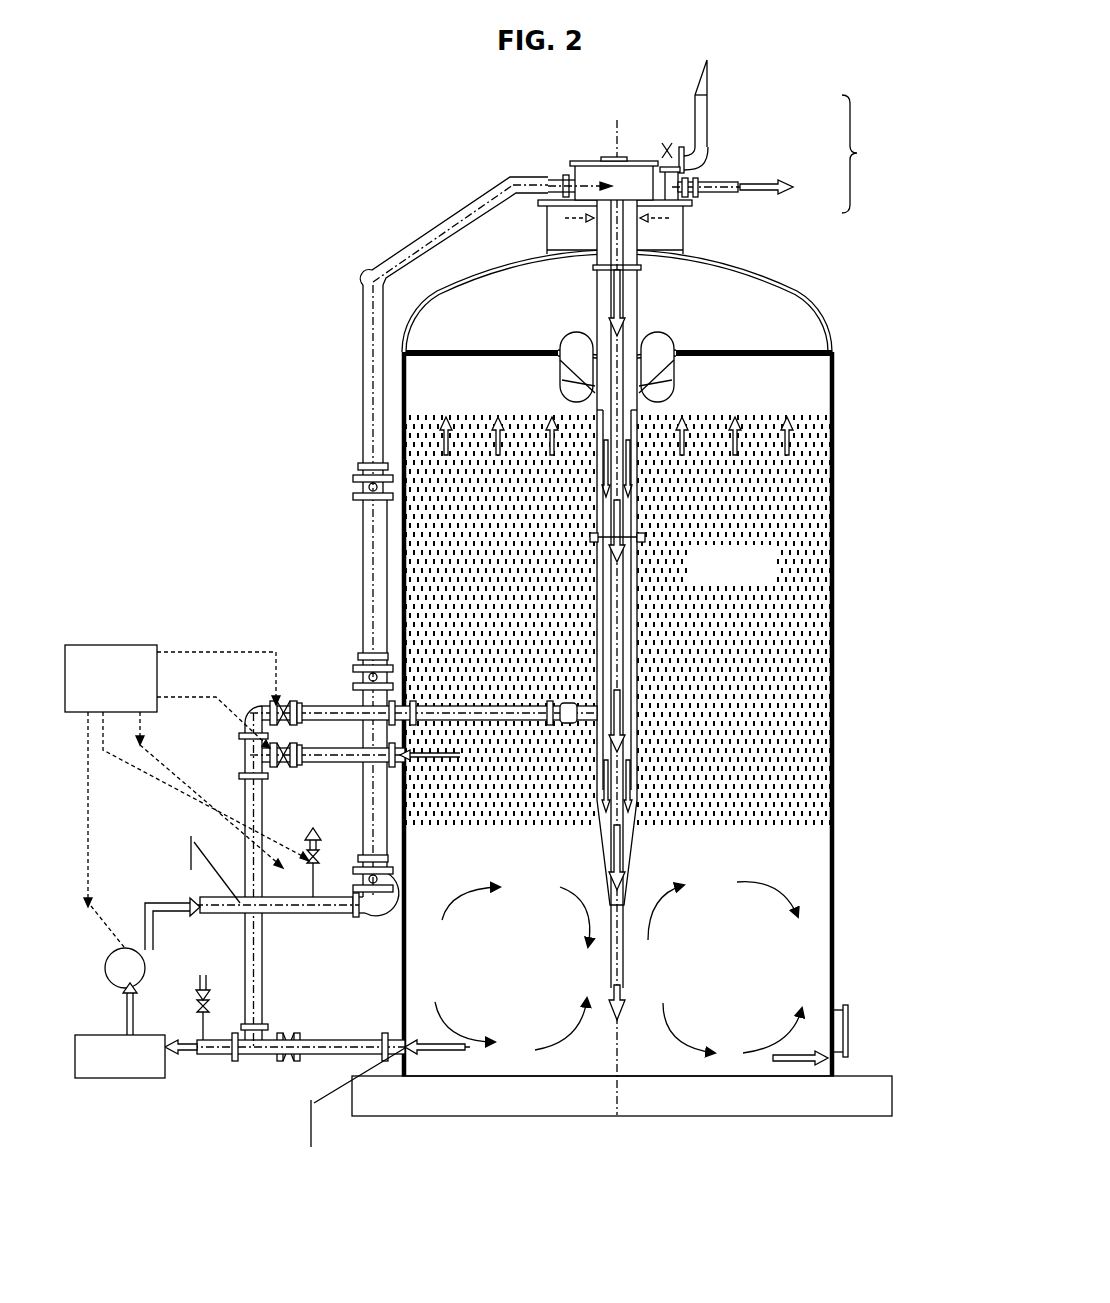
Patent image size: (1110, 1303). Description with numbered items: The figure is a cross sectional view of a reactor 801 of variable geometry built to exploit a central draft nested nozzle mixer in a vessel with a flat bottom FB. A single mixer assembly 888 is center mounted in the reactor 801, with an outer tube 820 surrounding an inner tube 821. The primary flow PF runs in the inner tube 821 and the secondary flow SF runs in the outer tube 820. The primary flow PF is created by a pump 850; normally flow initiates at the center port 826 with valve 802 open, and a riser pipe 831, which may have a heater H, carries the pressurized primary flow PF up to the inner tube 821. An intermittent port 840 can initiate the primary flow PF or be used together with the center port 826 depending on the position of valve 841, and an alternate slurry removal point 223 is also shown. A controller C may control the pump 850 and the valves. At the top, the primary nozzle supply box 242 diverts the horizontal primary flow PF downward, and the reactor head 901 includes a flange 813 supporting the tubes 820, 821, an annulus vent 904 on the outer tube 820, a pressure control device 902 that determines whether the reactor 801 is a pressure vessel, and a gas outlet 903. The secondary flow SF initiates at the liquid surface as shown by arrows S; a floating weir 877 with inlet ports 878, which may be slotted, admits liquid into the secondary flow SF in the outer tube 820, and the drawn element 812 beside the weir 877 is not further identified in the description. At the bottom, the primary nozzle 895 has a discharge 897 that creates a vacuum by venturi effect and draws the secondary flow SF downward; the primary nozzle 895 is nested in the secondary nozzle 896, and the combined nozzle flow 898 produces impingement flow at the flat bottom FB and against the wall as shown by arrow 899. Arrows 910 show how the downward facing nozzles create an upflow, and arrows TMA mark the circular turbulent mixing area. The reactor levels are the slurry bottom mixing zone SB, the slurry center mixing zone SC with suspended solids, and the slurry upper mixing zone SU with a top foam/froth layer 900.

The primary nozzle supply box 242 is at (637, 178).
The mixer assembly 888 is at (592, 163).
The flange 813 is at (585, 205).
The annulus vent 904 is at (556, 228).
The floating weir 877 is at (558, 343).
The top foam/froth layer 900 is at (565, 351).
The separator bulb 812 is at (557, 383).
The riser pipe 831 is at (363, 418).
The reactor 801 is at (400, 461).
The intermittent port 840 is at (600, 710).
The valve 841 is at (273, 710).
The valve 802 is at (273, 748).
The center port 826 is at (405, 754).
The alternate slurry removal point 223 is at (603, 715).
The pump 850 is at (122, 964).
The outer tube 820 is at (645, 660).
The inner tube 821 is at (628, 636).
The inlet ports 878 is at (616, 300).
The upflow arrows 910 is at (790, 425).
The primary nozzle 895 is at (637, 792).
The discharge 897 is at (633, 816).
The secondary nozzle 896 is at (633, 860).
The combined nozzle flow 898 is at (628, 1000).
The wall impingement arrow 899 is at (848, 1060).
The pressure control device 902 is at (700, 148).
The gas outlet 903 is at (751, 183).
The reactor head 901 is at (883, 154).
The primary flow PF is at (563, 180).
The surface S is at (643, 362).
The slurry upper mixing zone SU is at (743, 383).
The slurry center mixing zone SC is at (618, 620).
The slurry bottom mixing zone SB is at (740, 943).
The secondary flow SF is at (627, 776).
The heater H is at (370, 556).
The turbulent mixing area TMA is at (488, 1042).
The flat bottom FB is at (478, 1078).
The controller C is at (187, 796).